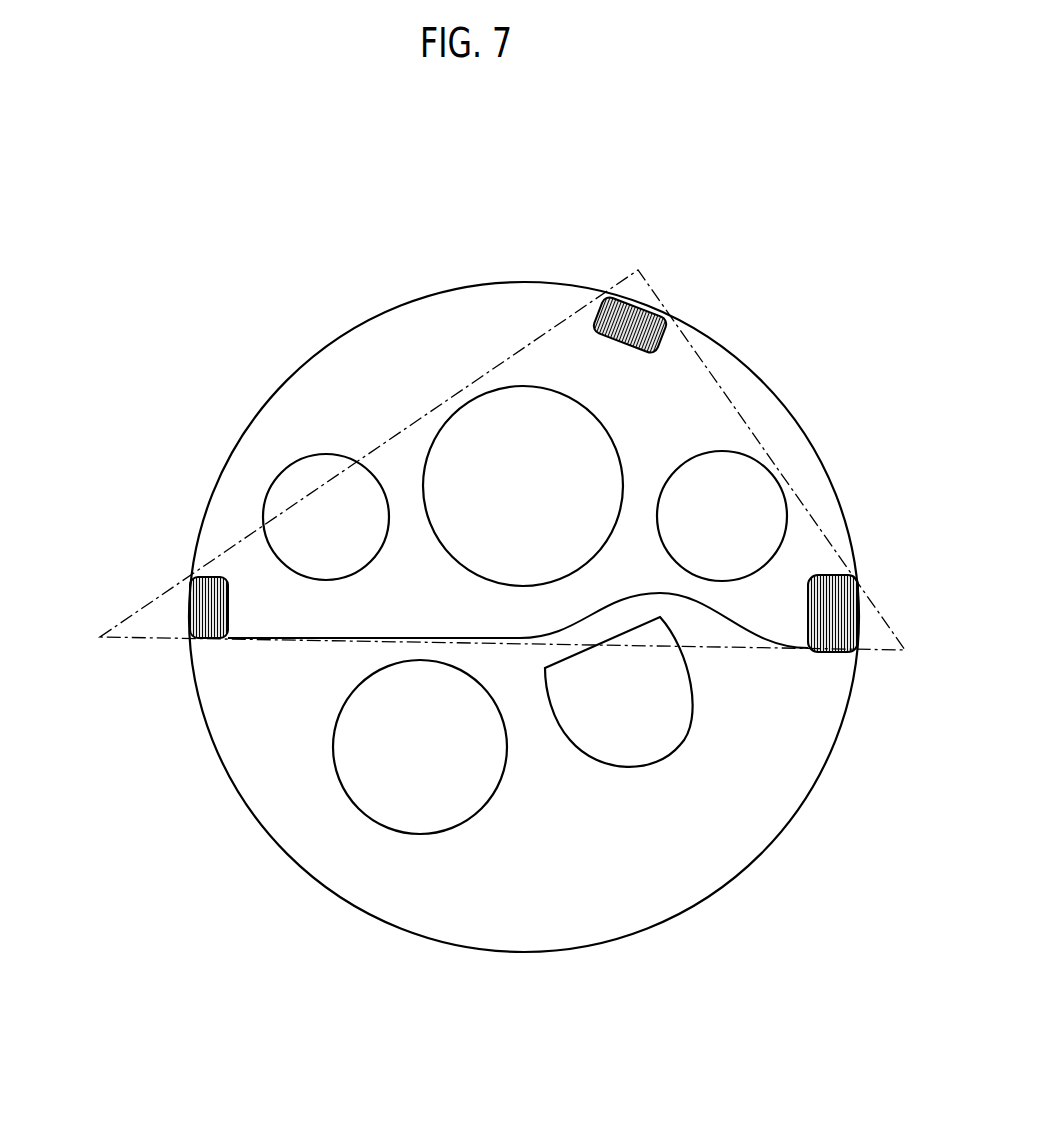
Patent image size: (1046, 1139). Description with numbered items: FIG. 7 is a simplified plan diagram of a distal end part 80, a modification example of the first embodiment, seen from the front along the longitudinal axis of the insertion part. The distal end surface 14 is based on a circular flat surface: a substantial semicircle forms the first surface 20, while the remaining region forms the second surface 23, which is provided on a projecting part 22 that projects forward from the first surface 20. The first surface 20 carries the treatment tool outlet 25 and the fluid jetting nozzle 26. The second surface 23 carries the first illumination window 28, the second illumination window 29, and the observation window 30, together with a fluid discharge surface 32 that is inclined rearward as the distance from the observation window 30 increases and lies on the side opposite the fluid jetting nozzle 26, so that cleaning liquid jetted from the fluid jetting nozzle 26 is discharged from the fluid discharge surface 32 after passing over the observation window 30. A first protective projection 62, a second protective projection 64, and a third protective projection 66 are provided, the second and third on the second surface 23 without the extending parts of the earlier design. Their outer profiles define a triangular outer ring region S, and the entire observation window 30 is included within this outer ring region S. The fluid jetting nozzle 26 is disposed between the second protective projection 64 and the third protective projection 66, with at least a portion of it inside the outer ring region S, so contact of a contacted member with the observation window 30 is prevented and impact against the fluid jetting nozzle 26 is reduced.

The distal end part 80 is at (465, 190).
The projecting part 22 is at (232, 416).
The distal end surface 14 is at (100, 507).
The second surface 23 is at (225, 497).
The first surface 20 is at (257, 757).
The outer ring region S is at (638, 270).
The fluid discharge surface 32 is at (458, 320).
The first protective projection 62 is at (635, 318).
The second protective projection 64 is at (208, 608).
The third protective projection 66 is at (837, 615).
The first illumination window 28 is at (322, 500).
The observation window 30 is at (565, 490).
The second illumination window 29 is at (723, 515).
The treatment tool outlet 25 is at (405, 763).
The fluid jetting nozzle 26 is at (642, 707).